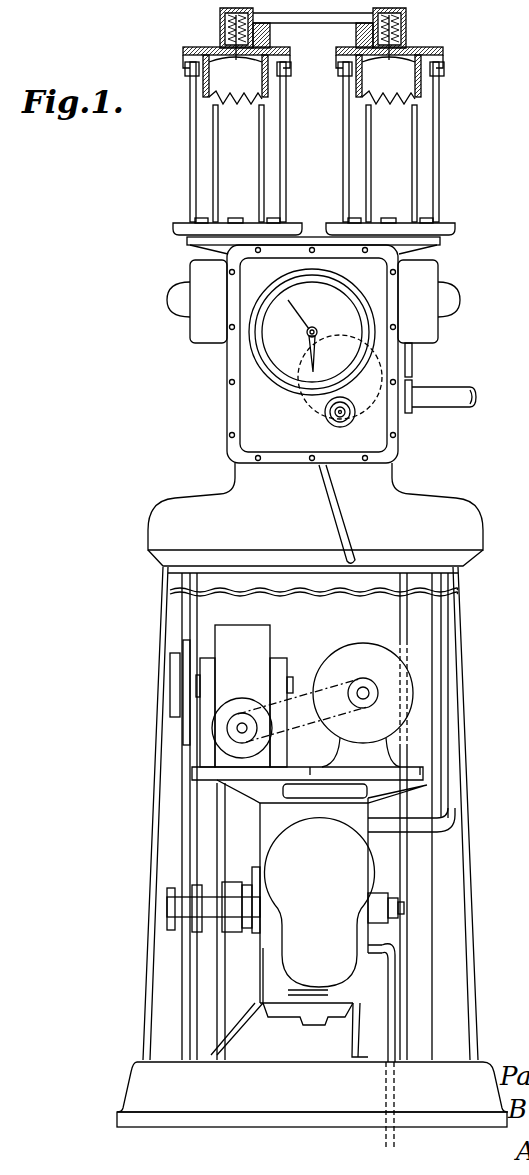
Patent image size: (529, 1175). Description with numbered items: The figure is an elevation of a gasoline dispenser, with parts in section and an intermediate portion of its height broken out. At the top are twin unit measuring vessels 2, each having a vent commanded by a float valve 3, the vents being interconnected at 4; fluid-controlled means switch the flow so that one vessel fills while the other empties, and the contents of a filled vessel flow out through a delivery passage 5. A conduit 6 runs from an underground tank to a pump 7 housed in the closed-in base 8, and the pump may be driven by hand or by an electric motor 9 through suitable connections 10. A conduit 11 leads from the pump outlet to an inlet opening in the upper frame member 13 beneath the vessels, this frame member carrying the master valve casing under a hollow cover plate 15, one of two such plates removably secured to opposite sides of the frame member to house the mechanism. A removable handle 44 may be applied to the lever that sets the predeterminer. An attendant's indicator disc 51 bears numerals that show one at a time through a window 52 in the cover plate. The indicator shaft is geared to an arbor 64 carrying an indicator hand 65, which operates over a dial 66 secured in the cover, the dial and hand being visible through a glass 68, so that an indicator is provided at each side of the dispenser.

The measuring vessel 2 is at (208, 113).
The float valve 3 is at (212, 50).
The vent interconnection 4 is at (316, 24).
The delivery passage 5 is at (455, 404).
The conduit 6 is at (393, 990).
The pump 7 is at (311, 930).
The closed-in base 8 is at (153, 817).
The electric motor 9 is at (352, 652).
The connections 10 is at (180, 773).
The conduit 11 is at (445, 641).
The upper frame member 13 is at (232, 457).
The hollow cover plate 15 is at (240, 396).
The removable handle 44 is at (327, 510).
The disc 51 is at (299, 409).
The window 52 is at (355, 414).
The arbor 64 is at (308, 328).
The indicator hand 65 is at (286, 364).
The dial 66 is at (282, 330).
The glass 68 is at (352, 364).